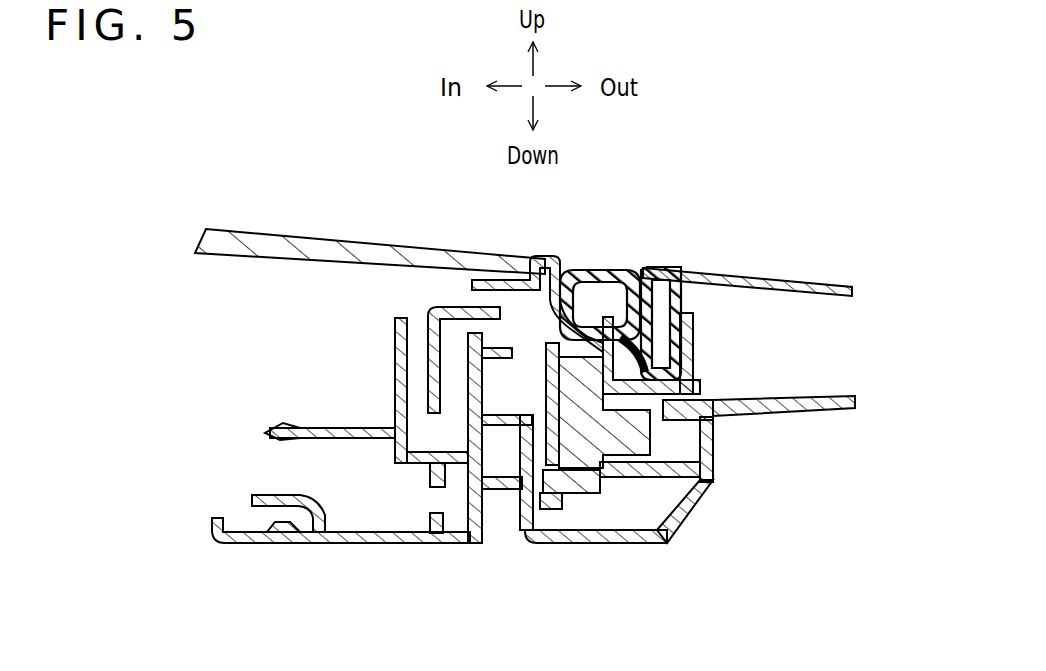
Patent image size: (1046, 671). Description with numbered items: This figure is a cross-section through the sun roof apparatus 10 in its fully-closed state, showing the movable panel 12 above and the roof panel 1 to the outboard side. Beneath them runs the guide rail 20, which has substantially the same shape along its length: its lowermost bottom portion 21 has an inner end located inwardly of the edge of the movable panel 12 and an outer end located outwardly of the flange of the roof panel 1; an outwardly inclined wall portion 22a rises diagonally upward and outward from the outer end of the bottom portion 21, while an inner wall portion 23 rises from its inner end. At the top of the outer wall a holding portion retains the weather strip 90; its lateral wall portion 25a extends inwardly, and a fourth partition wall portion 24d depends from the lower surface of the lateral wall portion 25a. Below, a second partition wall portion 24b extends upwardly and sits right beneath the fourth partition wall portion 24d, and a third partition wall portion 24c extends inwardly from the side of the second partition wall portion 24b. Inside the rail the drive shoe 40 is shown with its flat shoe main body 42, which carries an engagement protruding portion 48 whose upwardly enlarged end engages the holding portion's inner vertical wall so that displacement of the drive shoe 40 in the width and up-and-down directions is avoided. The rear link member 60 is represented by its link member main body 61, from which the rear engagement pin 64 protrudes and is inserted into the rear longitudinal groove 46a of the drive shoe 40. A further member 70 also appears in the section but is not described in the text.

The sun roof apparatus 10 is at (284, 98).
The movable panel 12 is at (300, 232).
The roof panel 1 is at (716, 265).
The shoe main body 42 is at (537, 271).
The drive shoe 40 is at (527, 258).
The weather strip 90 is at (598, 267).
The garnish 70 is at (440, 305).
The link member main body 61 is at (450, 404).
The rear link member 60 is at (546, 370).
The rear longitudinal groove 46a is at (585, 498).
The engagement protruding portion 48 is at (690, 393).
The lateral wall portion 25a is at (690, 366).
The rear engagement pin 64 is at (533, 507).
The guide rail 20 is at (533, 467).
The inner wall portion 23 is at (520, 447).
The bottom portion 21 is at (630, 544).
The outwardly inclined wall portion 22a is at (690, 502).
The fourth partition wall portion 24d is at (713, 440).
The second partition wall portion 24b is at (700, 478).
The third partition wall portion 24c is at (601, 505).